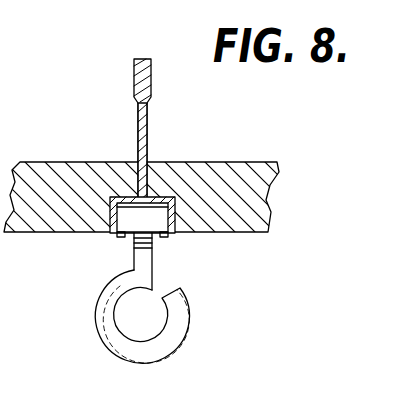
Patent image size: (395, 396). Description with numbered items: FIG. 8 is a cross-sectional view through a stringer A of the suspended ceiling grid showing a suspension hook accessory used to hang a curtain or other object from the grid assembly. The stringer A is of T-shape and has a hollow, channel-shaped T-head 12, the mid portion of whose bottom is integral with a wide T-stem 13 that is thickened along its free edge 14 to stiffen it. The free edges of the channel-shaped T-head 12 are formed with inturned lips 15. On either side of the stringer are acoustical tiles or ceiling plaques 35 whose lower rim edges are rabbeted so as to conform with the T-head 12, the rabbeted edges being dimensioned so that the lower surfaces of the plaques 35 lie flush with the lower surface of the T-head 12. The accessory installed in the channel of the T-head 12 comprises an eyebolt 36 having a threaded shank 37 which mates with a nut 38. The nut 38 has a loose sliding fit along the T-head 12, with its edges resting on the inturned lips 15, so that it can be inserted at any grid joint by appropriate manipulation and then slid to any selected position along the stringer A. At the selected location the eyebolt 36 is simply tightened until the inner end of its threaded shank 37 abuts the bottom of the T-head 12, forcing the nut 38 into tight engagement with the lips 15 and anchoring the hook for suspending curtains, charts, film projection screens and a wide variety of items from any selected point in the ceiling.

The main stringer A is at (134, 84).
The T-head 12 is at (112, 214).
The T-stem 13 is at (146, 137).
The free edge 14 is at (149, 88).
The inturned lips 15 is at (125, 237).
The ceiling plaques 35 is at (88, 147).
The eyebolt 36 is at (109, 284).
The threaded shank 37 is at (153, 246).
The nut 38 is at (158, 218).